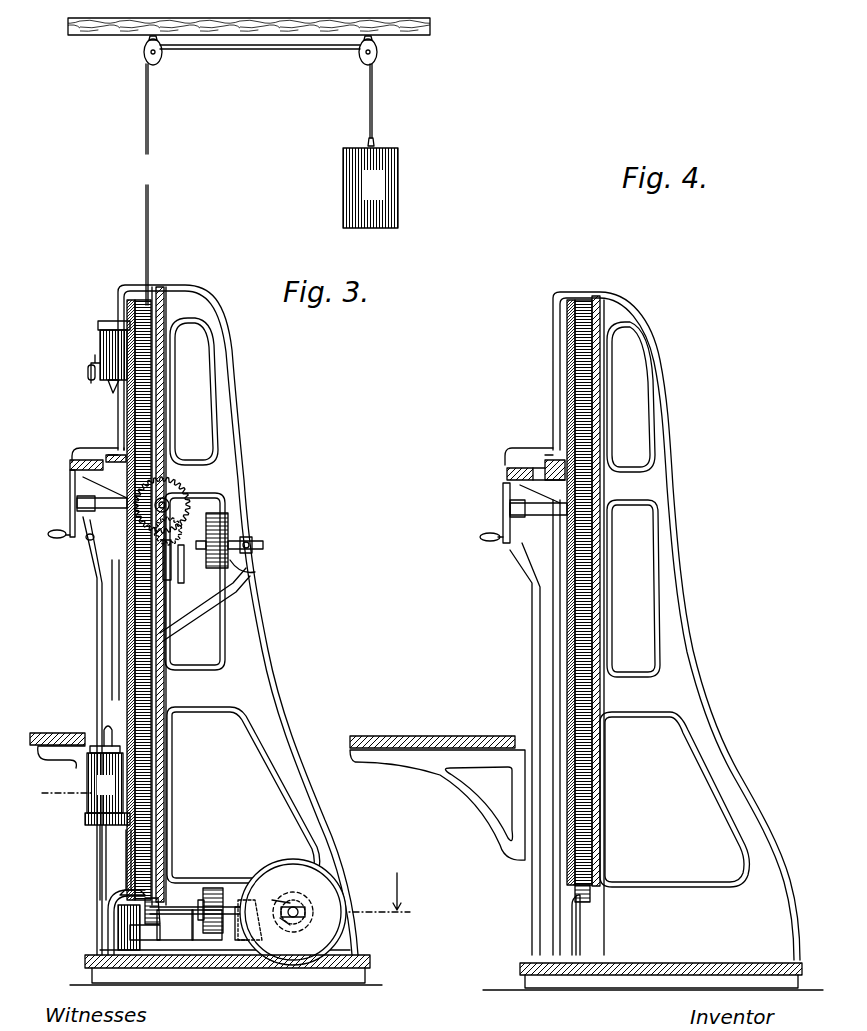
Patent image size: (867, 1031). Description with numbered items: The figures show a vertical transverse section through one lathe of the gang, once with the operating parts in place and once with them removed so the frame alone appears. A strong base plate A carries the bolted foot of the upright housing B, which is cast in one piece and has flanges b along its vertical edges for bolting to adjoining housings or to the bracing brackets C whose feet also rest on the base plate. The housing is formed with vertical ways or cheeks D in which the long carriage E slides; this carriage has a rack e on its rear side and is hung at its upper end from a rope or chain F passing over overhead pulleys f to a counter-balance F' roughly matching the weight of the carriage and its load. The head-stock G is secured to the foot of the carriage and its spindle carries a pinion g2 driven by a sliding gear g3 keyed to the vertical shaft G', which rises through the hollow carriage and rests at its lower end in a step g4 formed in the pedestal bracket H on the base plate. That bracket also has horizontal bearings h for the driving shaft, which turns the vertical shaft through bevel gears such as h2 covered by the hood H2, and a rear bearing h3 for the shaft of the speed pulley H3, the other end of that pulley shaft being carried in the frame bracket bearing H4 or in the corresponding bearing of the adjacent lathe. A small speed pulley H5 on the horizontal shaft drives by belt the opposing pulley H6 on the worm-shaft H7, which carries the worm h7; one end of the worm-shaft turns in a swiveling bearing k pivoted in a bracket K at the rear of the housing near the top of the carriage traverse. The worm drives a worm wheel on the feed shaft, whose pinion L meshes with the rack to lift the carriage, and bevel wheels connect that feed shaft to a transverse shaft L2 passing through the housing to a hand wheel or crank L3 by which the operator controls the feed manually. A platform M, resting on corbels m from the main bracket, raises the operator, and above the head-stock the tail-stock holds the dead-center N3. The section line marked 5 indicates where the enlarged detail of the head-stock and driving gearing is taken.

In FIG. 3, the base plate A is at (226, 970).
In FIG. 4, the base plate A is at (653, 976).
In FIG. 4, the upright housing B is at (588, 898).
In FIG. 3, the bracing-bracket C is at (96, 652).
In FIG. 4, the bracing-bracket C is at (652, 626).
In FIG. 3, the vertical way D is at (160, 862).
In FIG. 4, the vertical way D is at (596, 853).
In FIG. 3, the carriage E is at (148, 410).
In FIG. 4, the carriage E is at (583, 591).
In FIG. 3, the rope or chain F is at (260, 184).
In FIG. 3, the counter-balance F' is at (370, 188).
In FIG. 3, the head-stock G is at (105, 762).
In FIG. 3, the vertical shaft G' is at (118, 884).
In FIG. 3, the pedestal-bracket H is at (232, 900).
In FIG. 3, the hood H2 is at (106, 918).
In FIG. 3, the speed-pulley H3 is at (293, 912).
In FIG. 3, the wheel hub H4 is at (306, 895).
In FIG. 3, the small speed-pulley H5 is at (204, 907).
In FIG. 3, the speed-pulley H6 is at (214, 530).
In FIG. 3, the worm-shaft H7 is at (262, 556).
In FIG. 3, the bracket K is at (190, 612).
In FIG. 3, the pinion L is at (194, 391).
In FIG. 4, the pinion L is at (631, 397).
In FIG. 3, the gear wheel L' is at (169, 505).
In FIG. 3, the transverse shaft L2 is at (92, 502).
In FIG. 4, the transverse shaft L2 is at (543, 518).
In FIG. 3, the hand wheel or crank L3 is at (68, 492).
In FIG. 4, the hand wheel or crank L3 is at (501, 513).
In FIG. 3, the platform M is at (57, 730).
In FIG. 4, the platform M is at (432, 732).
In FIG. 3, the dead-center N3 is at (98, 396).
In FIG. 3, the bracket O is at (68, 467).
In FIG. 4, the bracket O is at (506, 474).
In FIG. 4, the flange b is at (568, 923).
In FIG. 3, the rack e is at (168, 571).
In FIG. 3, the overhead pulley f is at (143, 58).
In FIG. 3, the pinion g2 is at (84, 819).
In FIG. 3, the sliding gear g3 is at (121, 860).
In FIG. 3, the step g4 is at (126, 929).
In FIG. 3, the horizontal bearing h is at (156, 897).
In FIG. 3, the bevel-gear h2 is at (160, 925).
In FIG. 3, the bearing h3 is at (298, 922).
In FIG. 3, the worm h7 is at (175, 531).
In FIG. 3, the swiveling bearing k is at (91, 540).
In FIG. 3, the corbel m is at (61, 757).
In FIG. 4, the corbel m is at (437, 805).
In FIG. 3, the section line 5 is at (224, 723).